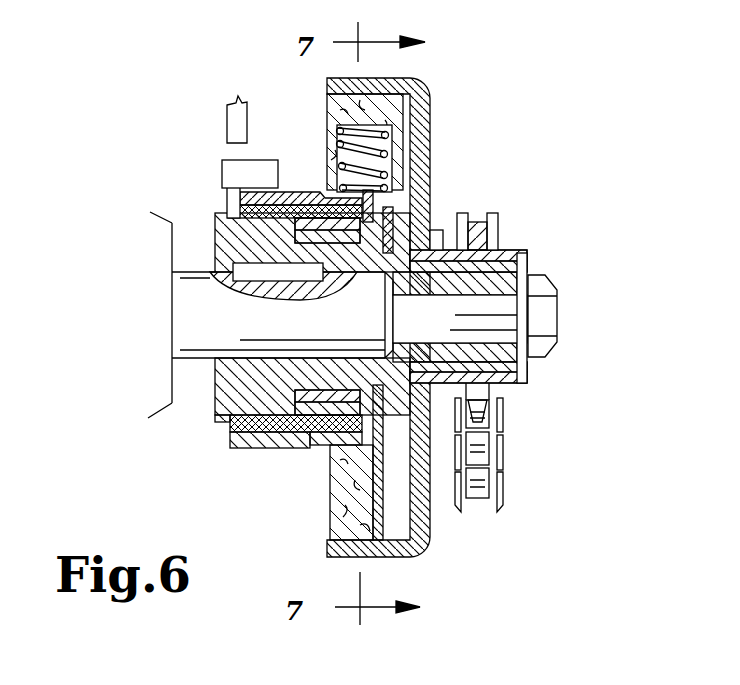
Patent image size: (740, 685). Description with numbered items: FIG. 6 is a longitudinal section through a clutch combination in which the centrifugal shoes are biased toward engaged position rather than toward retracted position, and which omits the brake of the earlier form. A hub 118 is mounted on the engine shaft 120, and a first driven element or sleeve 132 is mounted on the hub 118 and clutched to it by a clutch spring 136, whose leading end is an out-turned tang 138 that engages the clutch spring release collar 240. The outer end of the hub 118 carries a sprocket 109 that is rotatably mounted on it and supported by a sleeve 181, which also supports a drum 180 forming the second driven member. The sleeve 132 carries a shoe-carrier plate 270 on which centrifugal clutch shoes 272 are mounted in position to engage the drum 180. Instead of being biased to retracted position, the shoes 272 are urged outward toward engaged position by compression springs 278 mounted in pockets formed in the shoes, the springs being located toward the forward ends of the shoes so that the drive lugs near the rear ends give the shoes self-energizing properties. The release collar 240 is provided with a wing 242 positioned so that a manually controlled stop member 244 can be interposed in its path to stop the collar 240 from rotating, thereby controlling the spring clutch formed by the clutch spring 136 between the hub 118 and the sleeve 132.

The sprocket 109 is at (478, 222).
The hub 118 is at (232, 406).
The engine shaft 120 is at (248, 334).
The sleeve 132 is at (322, 442).
The clutch spring 136 is at (265, 445).
The out-turned tang 138 is at (232, 196).
The drum 180 is at (395, 78).
The sleeve 181 is at (508, 252).
The clutch spring release collar 240 is at (297, 192).
The wing 242 is at (262, 168).
The manually controlled stop member 244 is at (232, 120).
The shoe-carrier plate 270 is at (370, 203).
The centrifugal clutch shoes 272 is at (400, 108).
The compression springs 278 is at (388, 148).